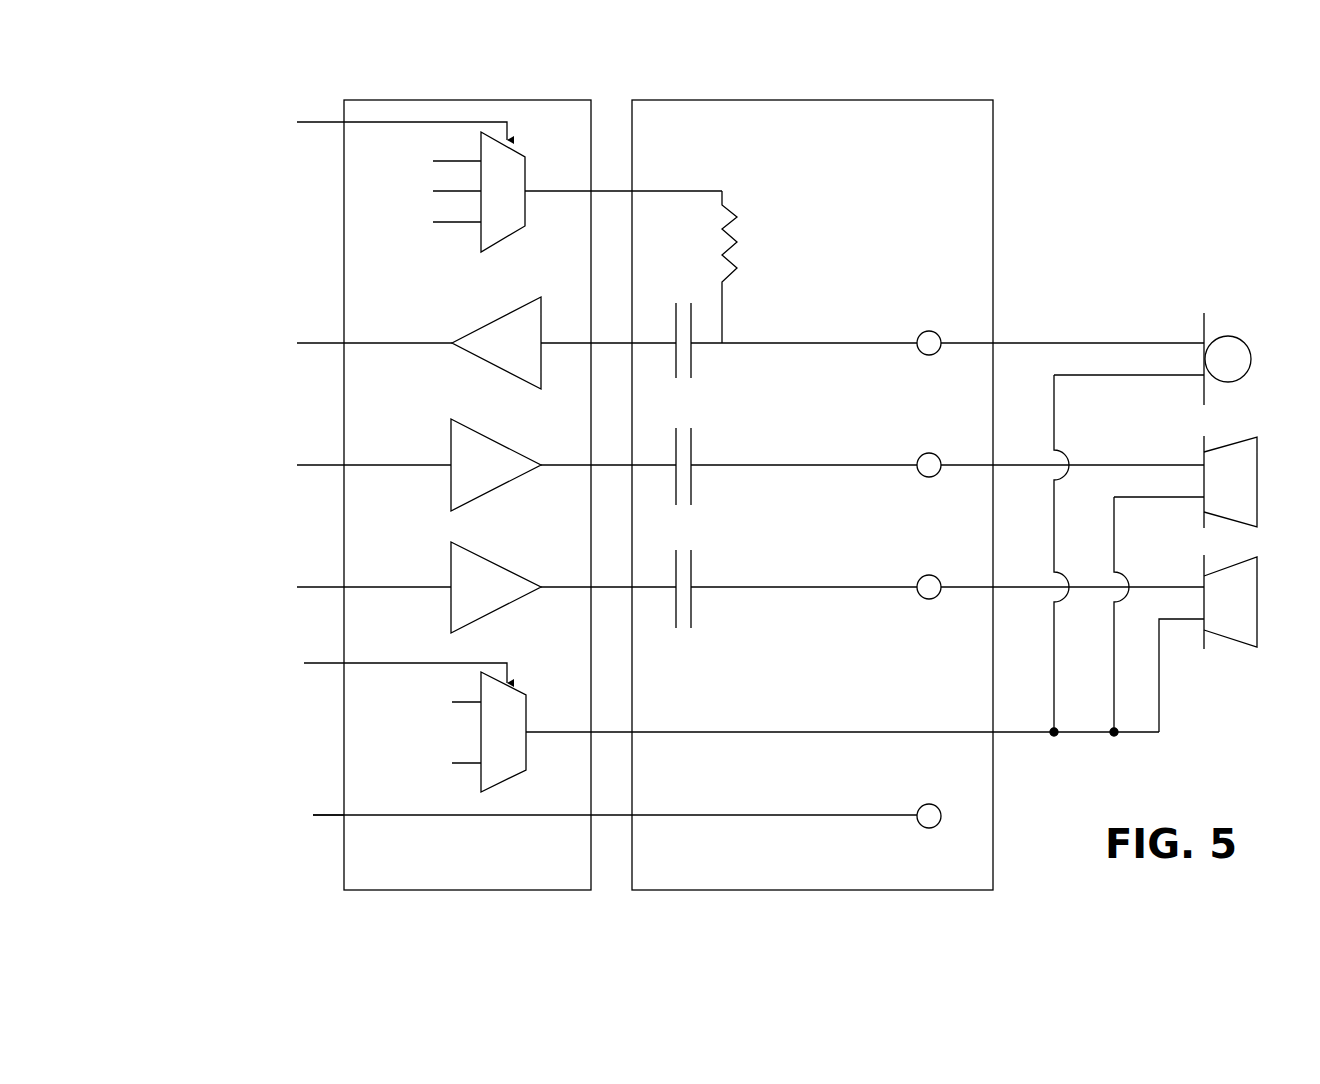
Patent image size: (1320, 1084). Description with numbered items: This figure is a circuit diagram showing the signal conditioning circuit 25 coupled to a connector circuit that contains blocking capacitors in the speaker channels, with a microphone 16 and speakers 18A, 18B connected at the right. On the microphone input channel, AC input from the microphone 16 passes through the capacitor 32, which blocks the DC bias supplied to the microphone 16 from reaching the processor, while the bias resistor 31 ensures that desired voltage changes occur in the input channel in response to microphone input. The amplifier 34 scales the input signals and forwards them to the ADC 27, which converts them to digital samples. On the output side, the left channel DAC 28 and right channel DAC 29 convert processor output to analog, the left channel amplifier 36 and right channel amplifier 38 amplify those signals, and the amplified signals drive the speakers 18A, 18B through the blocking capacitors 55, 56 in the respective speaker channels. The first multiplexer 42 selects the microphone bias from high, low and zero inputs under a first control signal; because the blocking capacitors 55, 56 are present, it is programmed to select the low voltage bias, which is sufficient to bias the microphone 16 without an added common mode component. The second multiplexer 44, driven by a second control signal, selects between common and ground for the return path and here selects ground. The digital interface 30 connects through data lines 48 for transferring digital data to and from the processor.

The microphone 16 is at (1228, 336).
The speaker 18A is at (1253, 437).
The speaker 18B is at (1233, 624).
The signal conditioning circuit 25 is at (344, 240).
The ADC 27 is at (285, 388).
The left channel DAC 28 is at (270, 518).
The right channel DAC 29 is at (270, 639).
The digital interface 30 is at (262, 861).
The bias resistor 31 is at (737, 243).
The capacitor 32 is at (692, 362).
The amplifier 34 is at (524, 367).
The left channel amplifier 36 is at (495, 473).
The right channel amplifier 38 is at (495, 595).
The first multiplexer 42 is at (510, 213).
The second multiplexer 44 is at (511, 747).
The data lines 48 is at (510, 820).
The blocking capacitor 55 is at (692, 480).
The blocking capacitor 56 is at (692, 606).